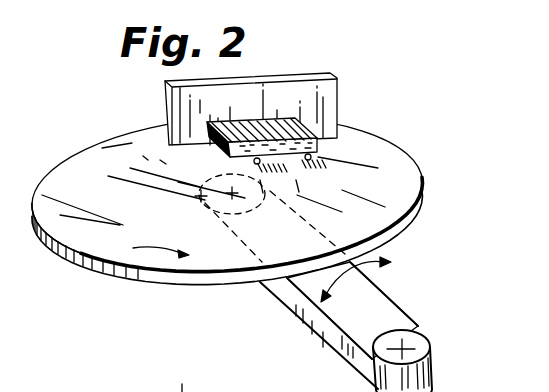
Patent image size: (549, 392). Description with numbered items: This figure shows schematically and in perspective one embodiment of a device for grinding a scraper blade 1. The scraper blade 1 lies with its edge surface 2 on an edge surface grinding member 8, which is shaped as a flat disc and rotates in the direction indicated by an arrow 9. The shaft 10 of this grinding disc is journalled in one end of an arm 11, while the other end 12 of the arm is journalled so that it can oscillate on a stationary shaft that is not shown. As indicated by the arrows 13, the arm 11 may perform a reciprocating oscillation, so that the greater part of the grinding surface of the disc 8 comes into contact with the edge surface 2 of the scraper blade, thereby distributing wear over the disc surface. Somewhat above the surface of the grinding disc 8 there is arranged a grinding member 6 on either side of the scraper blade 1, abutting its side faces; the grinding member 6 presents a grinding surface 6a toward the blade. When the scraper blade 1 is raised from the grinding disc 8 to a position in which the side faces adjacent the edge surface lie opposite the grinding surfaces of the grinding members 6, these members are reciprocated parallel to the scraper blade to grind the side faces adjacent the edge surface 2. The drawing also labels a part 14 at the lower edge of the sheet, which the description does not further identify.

The upright plate 1 is at (327, 92).
The turntable top surface 2 is at (332, 150).
The block 6 is at (217, 147).
The block top surface 6a is at (313, 138).
The turntable disc 8 is at (92, 238).
The rotation direction arrow 9 is at (153, 255).
The hidden position outline 10 is at (263, 196).
The support arm 11 is at (367, 297).
The pivot pin 12 is at (435, 367).
The swing direction arrow 13 is at (365, 268).
The base 14 is at (183, 391).